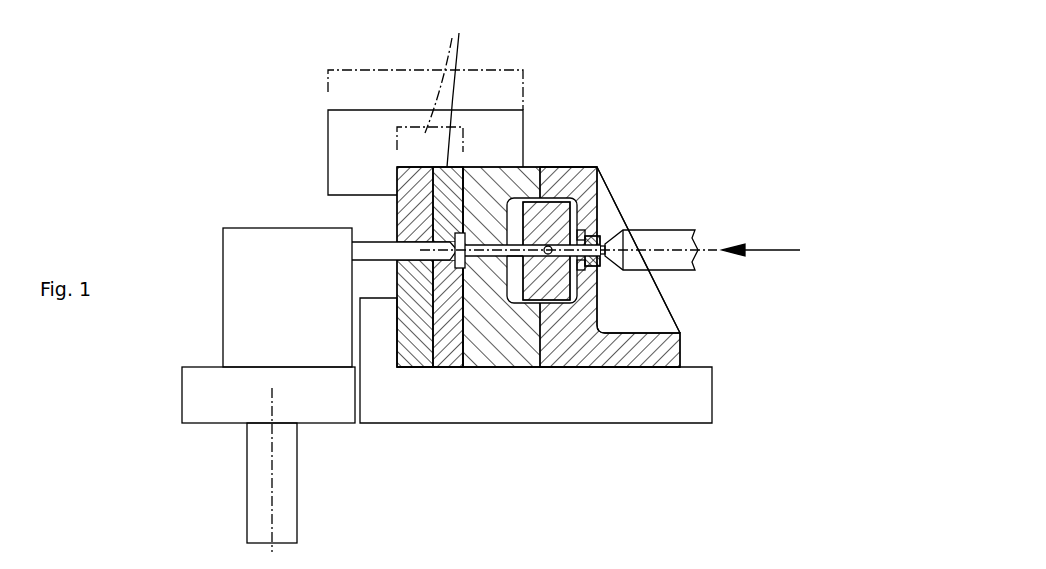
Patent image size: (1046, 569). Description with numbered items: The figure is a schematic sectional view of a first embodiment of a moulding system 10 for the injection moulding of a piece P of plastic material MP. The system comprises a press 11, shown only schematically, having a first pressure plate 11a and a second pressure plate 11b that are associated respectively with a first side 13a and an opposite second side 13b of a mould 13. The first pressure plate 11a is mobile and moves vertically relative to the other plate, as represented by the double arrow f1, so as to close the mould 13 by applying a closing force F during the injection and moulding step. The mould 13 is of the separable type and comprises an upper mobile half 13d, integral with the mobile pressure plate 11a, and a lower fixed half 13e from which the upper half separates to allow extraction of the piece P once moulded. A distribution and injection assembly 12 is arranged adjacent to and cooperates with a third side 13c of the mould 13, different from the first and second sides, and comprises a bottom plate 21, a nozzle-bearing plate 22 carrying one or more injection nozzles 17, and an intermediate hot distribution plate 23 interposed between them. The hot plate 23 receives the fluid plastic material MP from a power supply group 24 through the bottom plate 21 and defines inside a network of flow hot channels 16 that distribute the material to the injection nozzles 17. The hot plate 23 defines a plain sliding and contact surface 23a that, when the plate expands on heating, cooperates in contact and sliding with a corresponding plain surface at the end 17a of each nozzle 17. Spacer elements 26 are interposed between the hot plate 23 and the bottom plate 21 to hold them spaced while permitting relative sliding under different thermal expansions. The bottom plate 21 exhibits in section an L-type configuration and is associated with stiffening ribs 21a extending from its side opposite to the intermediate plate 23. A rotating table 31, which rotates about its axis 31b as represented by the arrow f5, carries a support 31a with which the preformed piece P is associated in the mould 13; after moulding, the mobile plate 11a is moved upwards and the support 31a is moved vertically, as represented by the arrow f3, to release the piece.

The moulding system 10 is at (659, 96).
The press 11 is at (254, 72).
The first pressure plate 11a is at (517, 128).
The second pressure plate 11b is at (712, 390).
The distribution and injection assembly 12 is at (618, 158).
The mould 13 is at (428, 225).
The first side 13a is at (447, 168).
The second side 13b is at (420, 370).
The third side 13c is at (487, 167).
The upper mobile part 13d is at (222, 165).
The lower fixed part 13e is at (397, 342).
The flow hot channels 16 is at (578, 275).
The injection nozzles 17 is at (490, 263).
The end of the injection nozzle 17a is at (512, 270).
The bottom plate 21 is at (588, 190).
The stiffening ribs 21a is at (657, 300).
The nozzle-bearing plate 22 is at (502, 343).
The intermediate distribution plate 23 is at (575, 198).
The sliding and contact surface 23a is at (520, 198).
The power supply group 24 is at (668, 224).
The spacer elements 26 is at (578, 222).
The rotating table 31 is at (183, 392).
The support 31a is at (366, 243).
The axis 31b is at (270, 490).
The closing force F is at (418, 100).
The double arrow f1 is at (291, 85).
The arrow f3 is at (381, 236).
The arrow f5 is at (308, 466).
The piece P is at (440, 262).
The plastic material MP is at (762, 250).